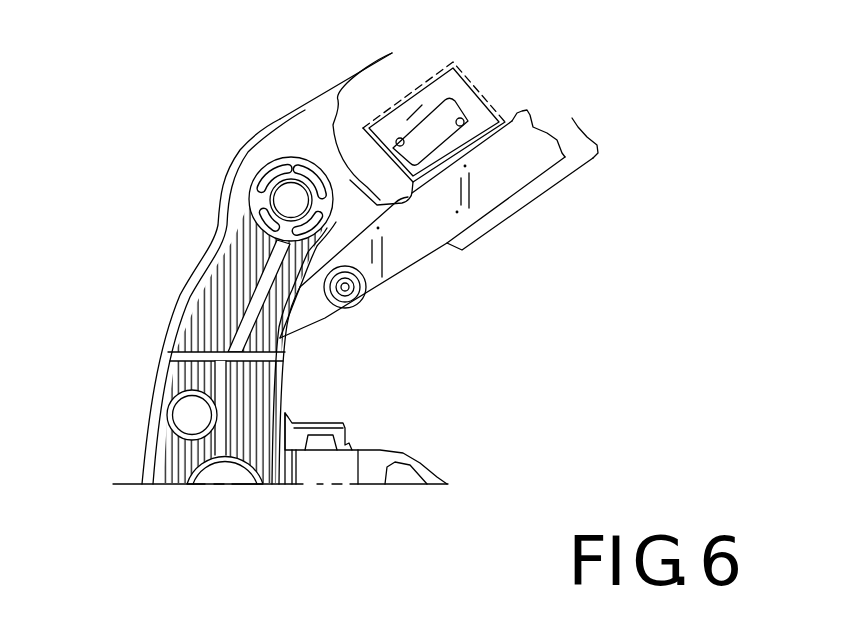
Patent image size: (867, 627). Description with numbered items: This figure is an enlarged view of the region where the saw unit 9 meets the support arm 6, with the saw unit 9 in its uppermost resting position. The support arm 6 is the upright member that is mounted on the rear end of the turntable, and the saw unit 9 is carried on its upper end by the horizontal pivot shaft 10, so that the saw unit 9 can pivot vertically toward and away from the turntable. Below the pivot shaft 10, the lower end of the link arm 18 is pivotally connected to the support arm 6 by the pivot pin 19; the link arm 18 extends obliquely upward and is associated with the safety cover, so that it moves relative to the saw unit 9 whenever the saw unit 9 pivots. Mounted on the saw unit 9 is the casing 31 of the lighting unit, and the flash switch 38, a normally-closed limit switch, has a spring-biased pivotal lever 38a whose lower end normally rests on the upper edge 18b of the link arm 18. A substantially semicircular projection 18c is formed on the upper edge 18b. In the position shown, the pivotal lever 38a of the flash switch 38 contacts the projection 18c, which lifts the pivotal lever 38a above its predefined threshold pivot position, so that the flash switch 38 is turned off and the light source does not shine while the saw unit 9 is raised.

The support arm 6 is at (207, 310).
The saw unit 9 is at (315, 97).
The pivot shaft 10 is at (293, 197).
The link arm 18 is at (407, 260).
The upper edge 18b is at (521, 113).
The semicircular projection 18c is at (420, 193).
The pivot pin 19 is at (347, 290).
The casing 31 is at (477, 66).
The flash switch 38 is at (437, 123).
The pivotal lever 38a is at (452, 122).